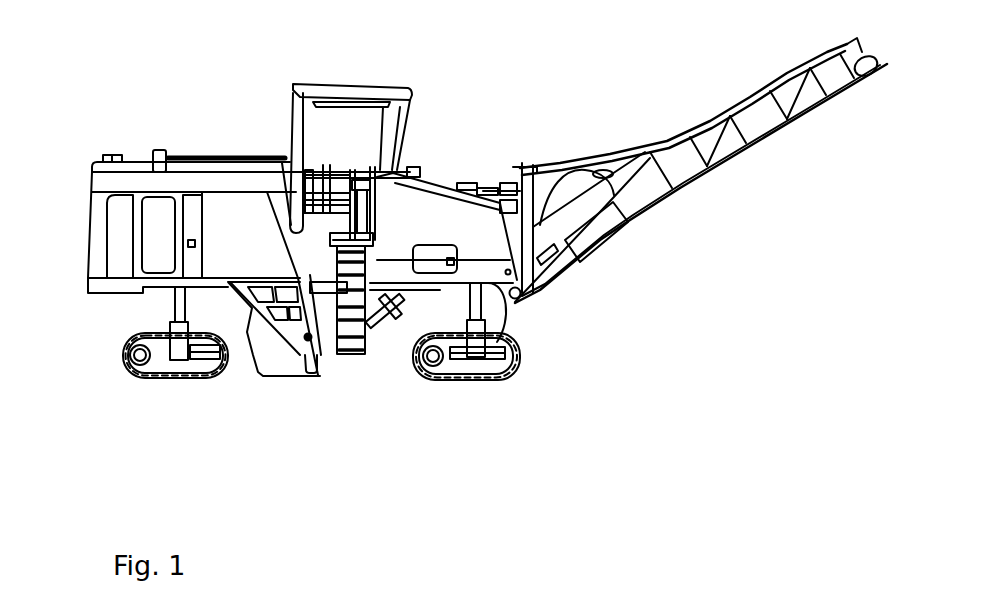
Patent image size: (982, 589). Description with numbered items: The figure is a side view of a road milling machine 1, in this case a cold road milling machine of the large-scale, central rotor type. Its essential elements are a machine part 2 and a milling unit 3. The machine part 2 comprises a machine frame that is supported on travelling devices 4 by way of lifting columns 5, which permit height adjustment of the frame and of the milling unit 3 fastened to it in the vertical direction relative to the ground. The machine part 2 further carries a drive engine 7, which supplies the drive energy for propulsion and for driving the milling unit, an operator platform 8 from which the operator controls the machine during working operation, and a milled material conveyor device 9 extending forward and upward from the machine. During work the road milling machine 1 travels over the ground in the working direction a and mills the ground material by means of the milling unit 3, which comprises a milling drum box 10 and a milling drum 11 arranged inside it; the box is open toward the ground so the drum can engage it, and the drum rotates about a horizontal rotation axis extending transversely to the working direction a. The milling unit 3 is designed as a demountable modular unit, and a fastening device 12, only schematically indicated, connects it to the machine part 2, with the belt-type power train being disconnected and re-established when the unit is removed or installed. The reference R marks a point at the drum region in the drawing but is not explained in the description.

The road milling machine 1 is at (487, 109).
The machine part 2 is at (123, 220).
The milling unit 3 is at (332, 352).
The travelling devices 4 is at (148, 375).
The lifting columns 5 is at (182, 302).
The drive engine 7 is at (210, 237).
The operator platform 8 is at (357, 150).
The milled material conveyor device 9 is at (630, 207).
The milling drum box 10 is at (270, 363).
The milling drum 11 is at (347, 390).
The fastening device 12 is at (368, 303).
The milling drum rotation axis R is at (308, 337).
The working direction a is at (770, 355).